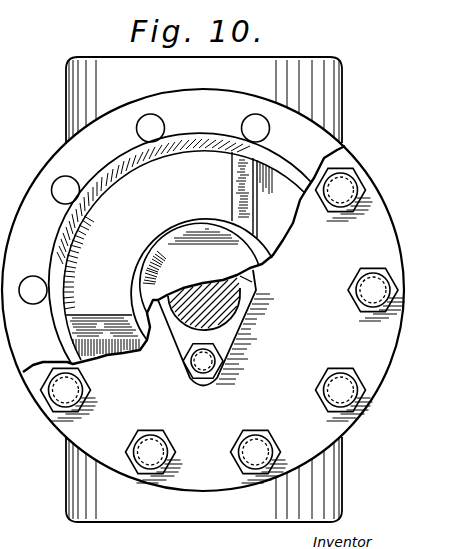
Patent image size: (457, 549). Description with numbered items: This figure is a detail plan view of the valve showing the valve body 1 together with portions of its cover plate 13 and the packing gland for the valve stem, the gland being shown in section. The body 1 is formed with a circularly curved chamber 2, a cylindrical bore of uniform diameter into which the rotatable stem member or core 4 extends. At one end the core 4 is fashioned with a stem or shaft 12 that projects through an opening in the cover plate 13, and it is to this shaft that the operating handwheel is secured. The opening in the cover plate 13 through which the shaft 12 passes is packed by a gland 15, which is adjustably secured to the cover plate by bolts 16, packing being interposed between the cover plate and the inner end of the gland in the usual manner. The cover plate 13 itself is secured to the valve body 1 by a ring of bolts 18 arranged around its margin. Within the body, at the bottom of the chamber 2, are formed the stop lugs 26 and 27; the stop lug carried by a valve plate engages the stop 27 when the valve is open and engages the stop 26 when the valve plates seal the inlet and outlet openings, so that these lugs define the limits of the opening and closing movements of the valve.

The valve body 1 is at (344, 114).
The chamber 2 is at (110, 166).
The stem member or core 4 is at (241, 282).
The stem or shaft 12 is at (193, 318).
The cover plate 13 is at (330, 432).
The gland 15 is at (257, 297).
The bolts 16 is at (188, 375).
The bolts 18 is at (327, 212).
The stop lug 26 is at (233, 176).
The stop lug 27 is at (77, 318).